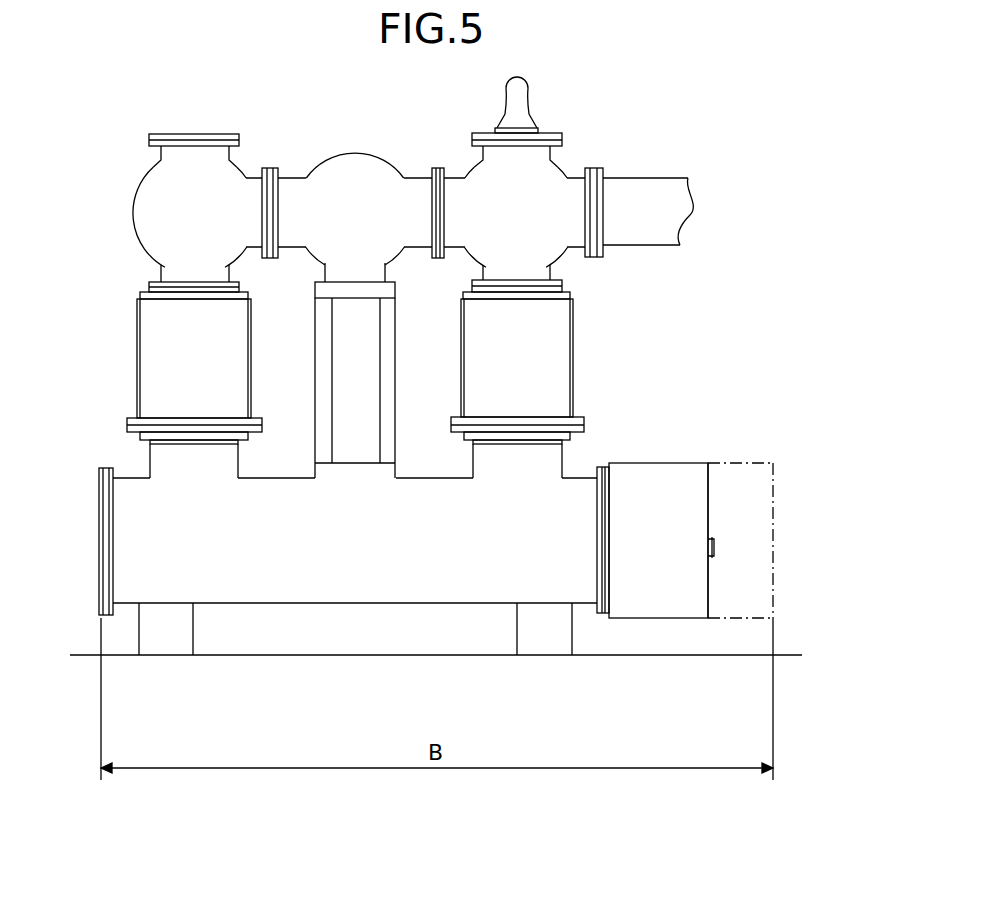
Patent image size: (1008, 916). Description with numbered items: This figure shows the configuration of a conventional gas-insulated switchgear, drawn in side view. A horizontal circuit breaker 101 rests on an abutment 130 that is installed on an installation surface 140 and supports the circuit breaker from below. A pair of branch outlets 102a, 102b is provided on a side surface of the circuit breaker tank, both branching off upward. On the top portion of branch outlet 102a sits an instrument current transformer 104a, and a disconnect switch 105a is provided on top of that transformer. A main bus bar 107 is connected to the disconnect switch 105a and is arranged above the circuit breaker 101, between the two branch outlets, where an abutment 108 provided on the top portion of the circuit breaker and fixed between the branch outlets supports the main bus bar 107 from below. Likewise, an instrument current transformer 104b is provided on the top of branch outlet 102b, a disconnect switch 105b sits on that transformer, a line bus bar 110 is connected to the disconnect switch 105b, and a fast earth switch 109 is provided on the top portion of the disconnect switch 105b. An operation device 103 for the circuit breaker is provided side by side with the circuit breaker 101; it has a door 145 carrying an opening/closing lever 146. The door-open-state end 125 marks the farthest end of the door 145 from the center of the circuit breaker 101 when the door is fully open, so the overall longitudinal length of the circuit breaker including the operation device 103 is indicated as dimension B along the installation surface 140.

The horizontal circuit breaker 101 is at (125, 540).
The branch outlet 102a is at (160, 463).
The branch outlet 102b is at (552, 463).
The operation device 103 is at (673, 473).
The instrument current transformer 104a is at (150, 360).
The instrument current transformer 104b is at (562, 357).
The disconnect switch 105a is at (142, 212).
The disconnect switch 105b is at (550, 250).
The main bus bar 107 is at (355, 165).
The abutment 108 is at (395, 367).
The fast earth switch 109 is at (517, 122).
The line bus bar 110 is at (647, 192).
The door-open-state end 125 is at (773, 537).
The abutment 130 is at (528, 629).
The installation surface 140 is at (785, 655).
The door 145 is at (708, 503).
The opening/closing lever 146 is at (717, 550).